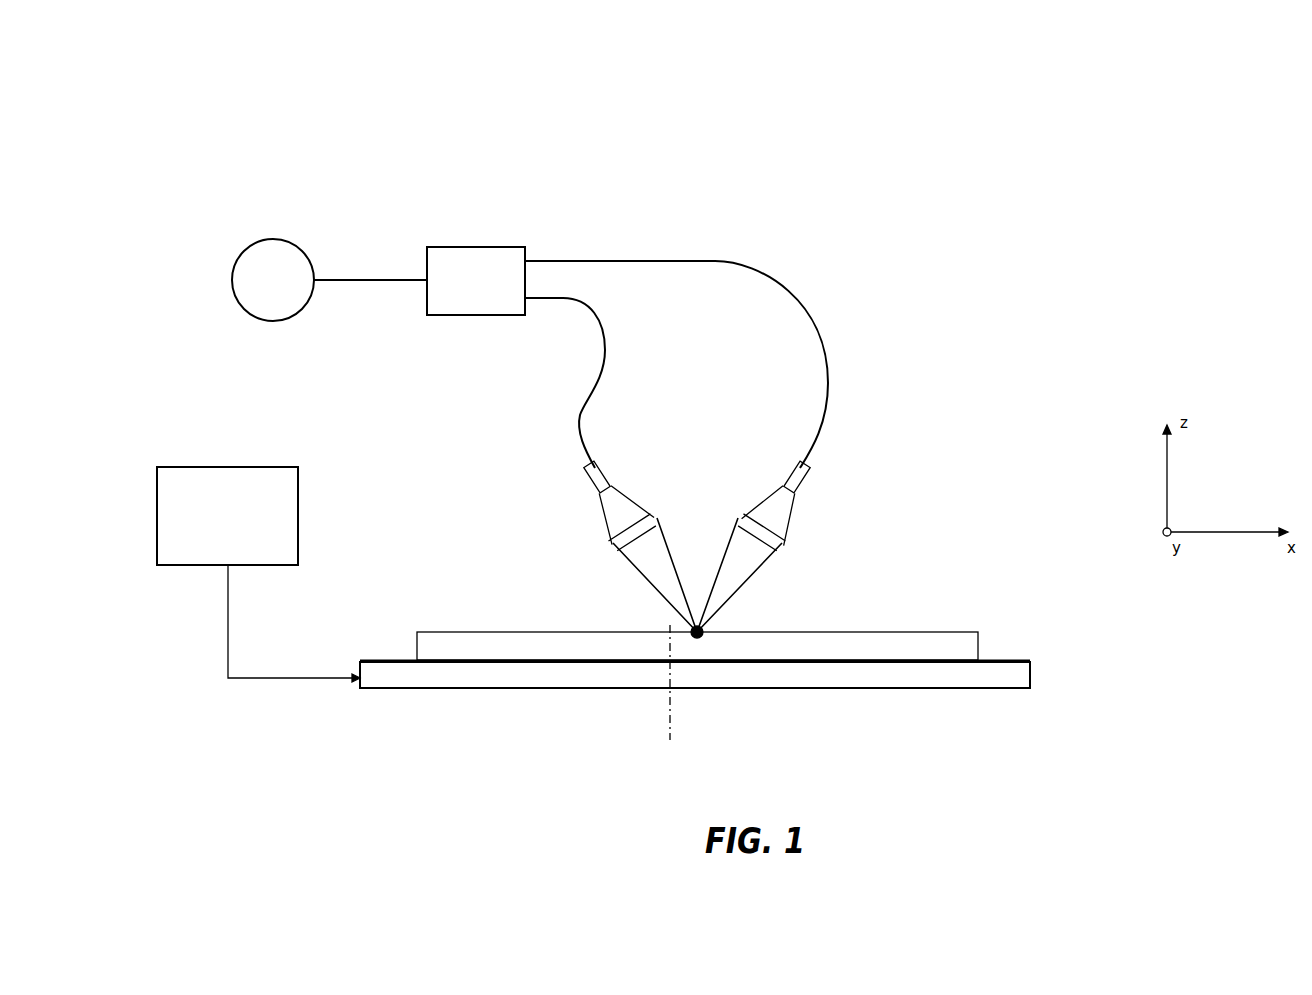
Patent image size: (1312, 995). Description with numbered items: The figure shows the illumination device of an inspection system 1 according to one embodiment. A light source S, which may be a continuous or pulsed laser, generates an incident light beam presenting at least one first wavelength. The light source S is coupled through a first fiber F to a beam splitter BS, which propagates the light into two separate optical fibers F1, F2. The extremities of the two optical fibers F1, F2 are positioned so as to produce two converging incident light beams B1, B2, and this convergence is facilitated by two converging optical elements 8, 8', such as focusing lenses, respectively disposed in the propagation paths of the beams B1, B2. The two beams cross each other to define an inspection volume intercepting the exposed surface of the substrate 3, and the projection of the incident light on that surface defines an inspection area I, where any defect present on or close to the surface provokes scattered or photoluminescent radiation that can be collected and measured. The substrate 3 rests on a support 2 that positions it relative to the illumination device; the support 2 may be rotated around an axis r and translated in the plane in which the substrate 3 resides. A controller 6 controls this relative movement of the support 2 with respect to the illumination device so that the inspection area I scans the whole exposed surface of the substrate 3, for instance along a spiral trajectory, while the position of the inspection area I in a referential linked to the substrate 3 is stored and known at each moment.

The inspection system 1 is at (742, 98).
The support 2 is at (377, 662).
The substrate 3 is at (980, 643).
The controller 6 is at (176, 565).
The converging optical element 8 is at (588, 507).
The converging optical element 8' is at (799, 507).
The light source S is at (245, 244).
The first fiber F is at (387, 280).
The beam splitter BS is at (467, 247).
The optical fiber F1 is at (823, 358).
The optical fiber F2 is at (580, 415).
The incident light beam B1 is at (745, 588).
The incident light beam B2 is at (647, 588).
The inspection area I is at (699, 638).
The axis r is at (666, 691).